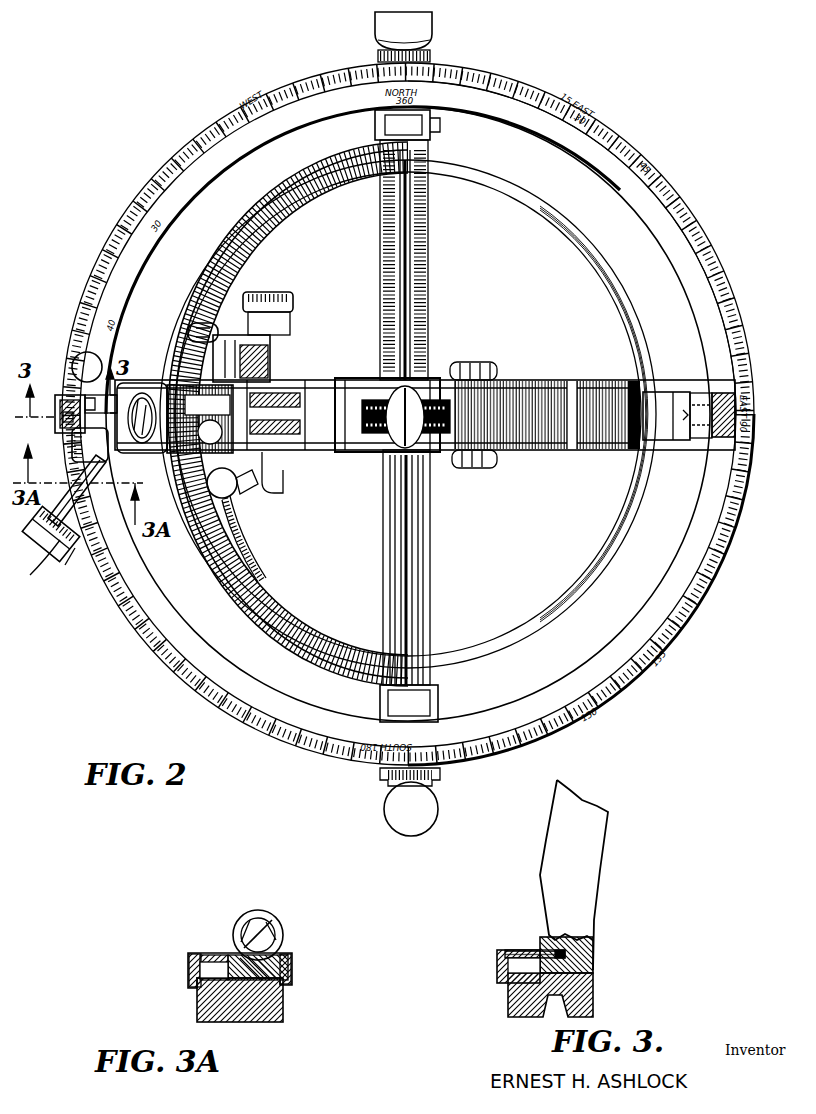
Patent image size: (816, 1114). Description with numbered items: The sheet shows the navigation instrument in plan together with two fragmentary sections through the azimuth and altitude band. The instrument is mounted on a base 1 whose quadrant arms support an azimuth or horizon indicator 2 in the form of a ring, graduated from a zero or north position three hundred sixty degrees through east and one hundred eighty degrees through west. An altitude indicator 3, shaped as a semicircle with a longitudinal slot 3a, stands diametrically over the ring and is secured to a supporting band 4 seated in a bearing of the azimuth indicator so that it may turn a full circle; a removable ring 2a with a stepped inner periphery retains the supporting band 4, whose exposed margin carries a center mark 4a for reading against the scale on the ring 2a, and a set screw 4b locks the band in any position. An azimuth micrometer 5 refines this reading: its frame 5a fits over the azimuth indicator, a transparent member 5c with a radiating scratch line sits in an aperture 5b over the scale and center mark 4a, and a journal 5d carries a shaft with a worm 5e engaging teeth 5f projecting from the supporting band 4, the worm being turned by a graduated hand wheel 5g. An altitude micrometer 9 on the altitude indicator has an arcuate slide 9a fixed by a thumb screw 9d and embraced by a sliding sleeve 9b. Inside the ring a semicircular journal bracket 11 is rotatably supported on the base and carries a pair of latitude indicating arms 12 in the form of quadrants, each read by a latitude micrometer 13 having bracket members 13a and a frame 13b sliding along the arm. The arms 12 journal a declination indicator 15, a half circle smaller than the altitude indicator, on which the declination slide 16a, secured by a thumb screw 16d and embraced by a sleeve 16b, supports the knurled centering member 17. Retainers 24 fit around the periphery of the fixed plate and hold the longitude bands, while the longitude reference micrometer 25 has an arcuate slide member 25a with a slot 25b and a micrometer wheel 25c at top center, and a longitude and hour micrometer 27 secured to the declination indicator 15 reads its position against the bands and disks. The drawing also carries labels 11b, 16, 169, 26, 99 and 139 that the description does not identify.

In FIG. 2, the base 1 is at (408, 414).
In FIG. 2, the azimuth or horizon indicator 2 is at (728, 392).
In FIG. 3A, the azimuth or horizon indicator 2 is at (270, 1015).
In FIG. 3, the azimuth or horizon indicator 2 is at (595, 1002).
In FIG. 2, the removable ring 2a is at (730, 378).
In FIG. 3A, the removable ring 2a is at (210, 955).
In FIG. 3, the removable ring 2a is at (510, 975).
In FIG. 2, the altitude indicator 3 is at (726, 400).
In FIG. 3, the altitude indicator 3 is at (580, 928).
In FIG. 2, the longitudinal slot 3a is at (285, 395).
In FIG. 2, the supporting band 4 is at (722, 345).
In FIG. 3A, the supporting band 4 is at (280, 975).
In FIG. 3, the supporting band 4 is at (595, 962).
In FIG. 2, the center mark 4a is at (70, 395).
In FIG. 2, the set screw 4b is at (95, 358).
In FIG. 2, the azimuth micrometer 5 is at (100, 545).
In FIG. 3A, the azimuth micrometer 5 is at (195, 955).
In FIG. 3, the azimuth micrometer 5 is at (497, 962).
In FIG. 2, the frame 5a is at (62, 490).
In FIG. 3A, the frame 5a is at (190, 965).
In FIG. 2, the aperture 5b is at (65, 398).
In FIG. 3, the aperture 5b is at (510, 950).
In FIG. 2, the transparent member 5c is at (60, 425).
In FIG. 3, the transparent member 5c is at (555, 952).
In FIG. 2, the journal 5d is at (45, 548).
In FIG. 3A, the worm 5e is at (290, 970).
In FIG. 3A, the teeth 5f is at (238, 935).
In FIG. 2, the hand wheel 5g is at (50, 575).
In FIG. 2, the altitude micrometer 9 is at (165, 385).
In FIG. 2, the slide 9a is at (200, 419).
In FIG. 2, the sleeve 9b is at (142, 383).
In FIG. 2, the thumb screw 9d is at (210, 432).
In FIG. 2, the journal bracket 11 is at (677, 417).
In FIG. 2, the end block pin 11b is at (700, 440).
In FIG. 2, the latitude indicating arms 12 is at (406, 416).
In FIG. 2, the latitude micrometer 13 is at (385, 782).
In FIG. 2, the bracket members 13a is at (390, 118).
In FIG. 2, the frame 13b is at (432, 126).
In FIG. 2, the declination indicator 15 is at (345, 150).
In FIG. 2, the knob housing 16 is at (241, 358).
In FIG. 2, the slide 16a is at (222, 483).
In FIG. 2, the sleeve 16b is at (218, 326).
In FIG. 2, the thumb screw 16d is at (228, 508).
In FIG. 2, the graduated drum 169 is at (275, 292).
In FIG. 2, the centering member 17 is at (245, 361).
In FIG. 2, the retainers 24 is at (290, 378).
In FIG. 2, the longitude reference micrometer 25 is at (500, 468).
In FIG. 2, the arcuate slide member 25a is at (520, 386).
In FIG. 2, the slot 25b is at (458, 362).
In FIG. 2, the micrometer wheel 25c is at (420, 395).
In FIG. 2, the vertical rack column 26 is at (472, 458).
In FIG. 2, the longitude and hour micrometer 27 is at (350, 378).
In FIG. 2, the graduated dial 99 is at (93, 445).
In FIG. 2, the knob 139 is at (425, 34).